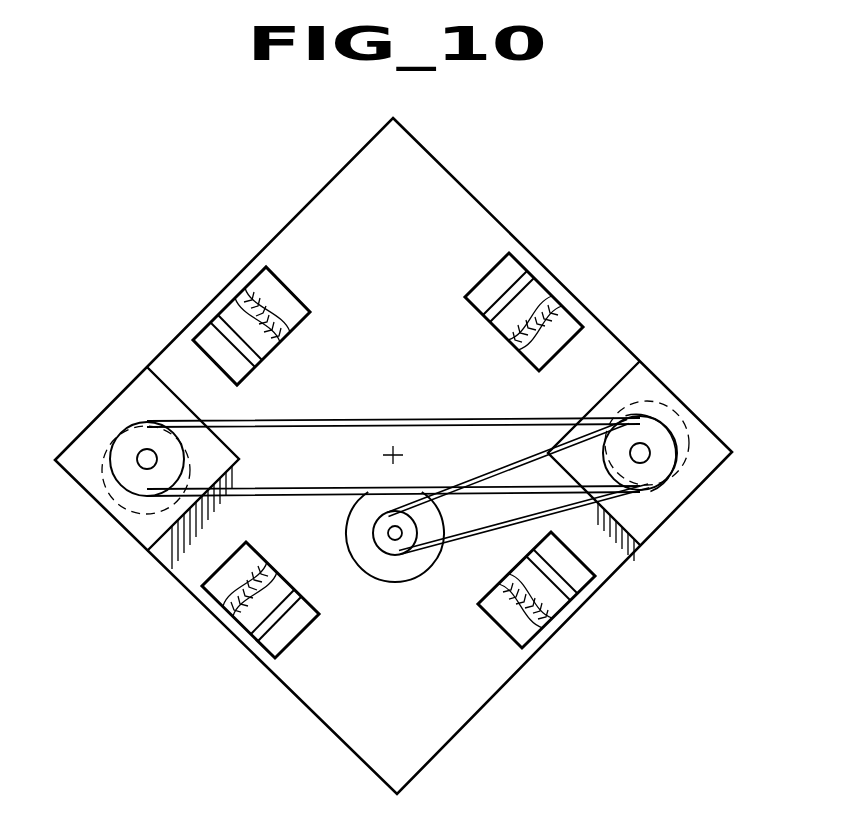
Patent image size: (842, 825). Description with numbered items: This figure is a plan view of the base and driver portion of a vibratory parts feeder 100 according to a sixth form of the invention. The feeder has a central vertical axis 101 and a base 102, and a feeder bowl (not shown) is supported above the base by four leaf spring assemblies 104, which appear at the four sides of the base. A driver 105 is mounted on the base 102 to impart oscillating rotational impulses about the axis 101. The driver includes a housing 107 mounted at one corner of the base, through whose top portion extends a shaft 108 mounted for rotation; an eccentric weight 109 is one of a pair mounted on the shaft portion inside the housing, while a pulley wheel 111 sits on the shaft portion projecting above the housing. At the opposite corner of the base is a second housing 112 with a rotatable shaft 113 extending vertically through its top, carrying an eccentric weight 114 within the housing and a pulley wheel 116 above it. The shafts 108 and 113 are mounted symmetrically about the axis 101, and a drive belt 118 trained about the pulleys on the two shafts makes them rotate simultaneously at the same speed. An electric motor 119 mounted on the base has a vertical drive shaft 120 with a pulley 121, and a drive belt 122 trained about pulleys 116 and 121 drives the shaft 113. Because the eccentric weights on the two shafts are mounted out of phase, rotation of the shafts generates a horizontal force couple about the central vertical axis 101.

The vibratory parts feeder 100 is at (198, 189).
The central vertical axis 101 is at (389, 454).
The base 102 is at (366, 148).
The leaf spring assemblies 104 is at (237, 312).
The driver 105 is at (340, 508).
The housing 107 is at (116, 405).
The shaft 108 is at (102, 459).
The eccentric weight 109 is at (106, 512).
The pulley wheel 111 is at (125, 431).
The housing 112 is at (660, 509).
The shaft 113 is at (644, 455).
The eccentric weight 114 is at (660, 404).
The pulley wheel 116 is at (689, 453).
The drive belt 118 is at (286, 421).
The electric motor 119 is at (365, 550).
The vertical drive shaft 120 is at (388, 531).
The pulley 121 is at (382, 543).
The drive belt 122 is at (527, 459).